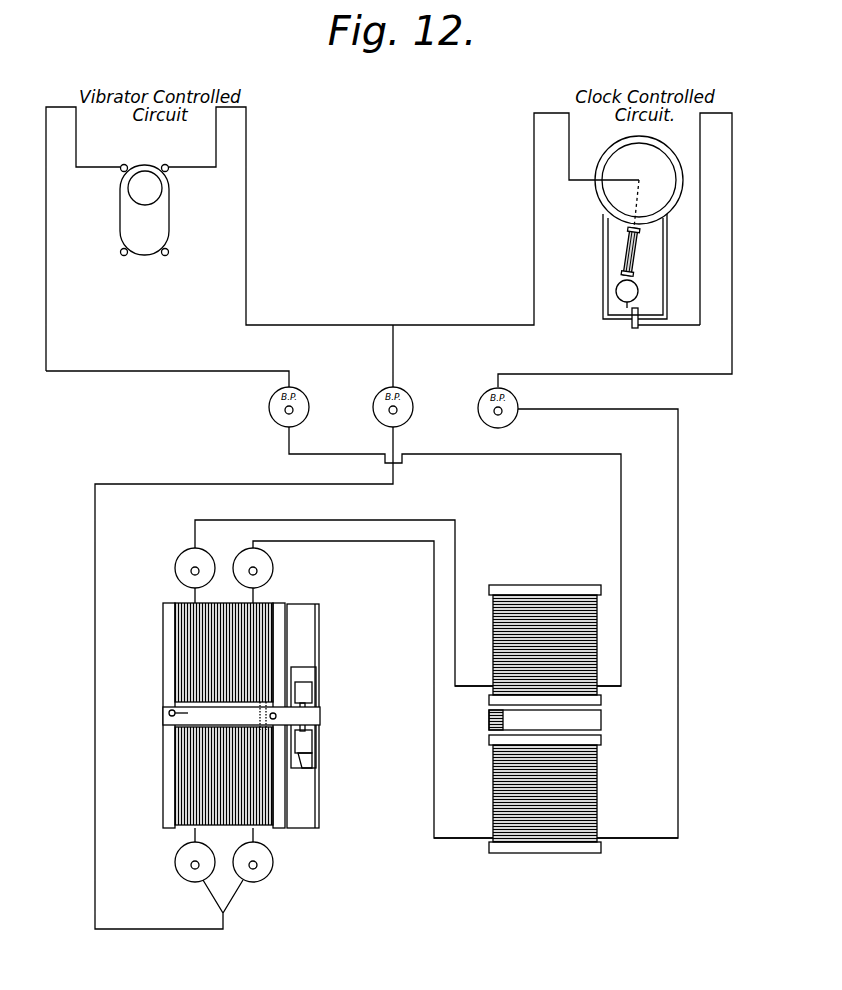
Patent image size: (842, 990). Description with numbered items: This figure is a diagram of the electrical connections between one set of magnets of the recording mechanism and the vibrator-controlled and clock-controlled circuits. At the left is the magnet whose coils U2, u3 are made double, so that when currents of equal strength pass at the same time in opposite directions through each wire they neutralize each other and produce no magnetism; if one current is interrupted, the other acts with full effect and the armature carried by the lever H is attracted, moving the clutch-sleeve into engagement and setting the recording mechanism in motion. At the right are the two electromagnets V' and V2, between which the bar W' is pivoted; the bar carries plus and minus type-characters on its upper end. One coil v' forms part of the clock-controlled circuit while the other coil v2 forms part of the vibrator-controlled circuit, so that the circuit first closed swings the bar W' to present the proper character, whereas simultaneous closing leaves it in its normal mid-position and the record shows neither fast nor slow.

The relay magnet coils U U2 is at (163, 658).
The coil u3 is at (190, 592).
The lever H is at (312, 716).
The electromagnet V' is at (545, 634).
The coil v' is at (547, 630).
The bar W' is at (524, 722).
The electromagnet V2 is at (543, 853).
The coil v2 is at (556, 830).